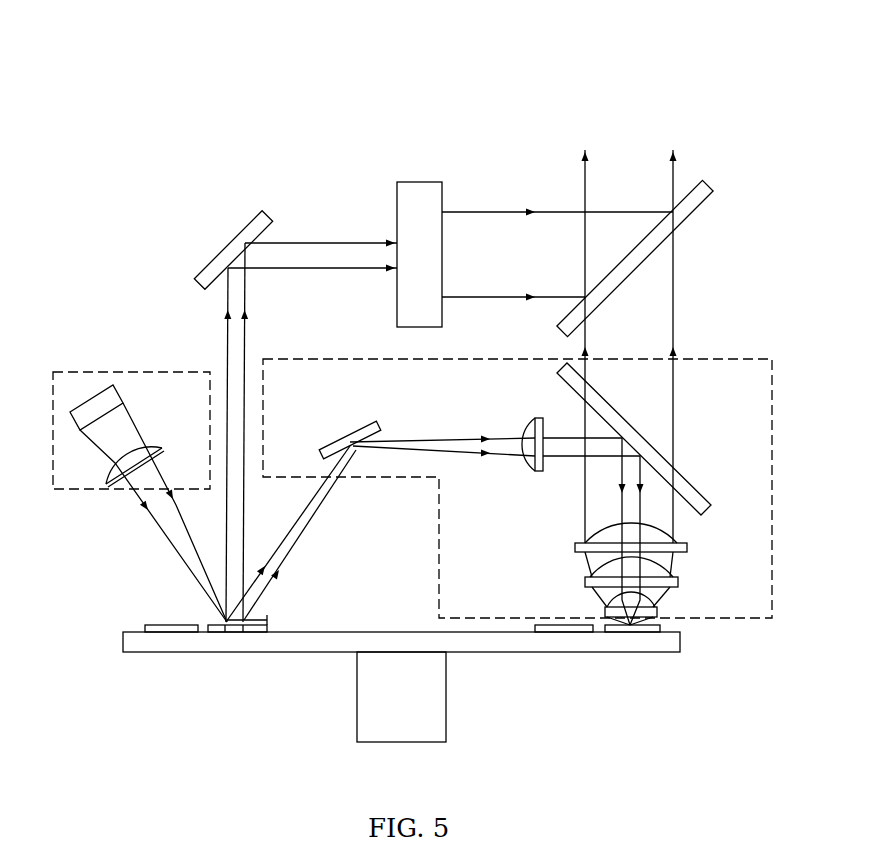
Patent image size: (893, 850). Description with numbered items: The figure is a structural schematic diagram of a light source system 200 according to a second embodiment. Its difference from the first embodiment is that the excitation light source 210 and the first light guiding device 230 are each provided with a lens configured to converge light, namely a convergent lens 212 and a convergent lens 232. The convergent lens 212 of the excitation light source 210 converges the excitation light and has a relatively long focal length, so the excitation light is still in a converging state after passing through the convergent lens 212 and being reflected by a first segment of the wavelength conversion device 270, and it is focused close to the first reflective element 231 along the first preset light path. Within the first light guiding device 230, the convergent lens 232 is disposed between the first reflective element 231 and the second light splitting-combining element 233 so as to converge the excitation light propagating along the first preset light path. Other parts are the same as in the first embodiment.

The light source system 200 is at (436, 46).
The excitation light source 210 is at (88, 372).
The convergent lens 212 is at (142, 445).
The first light guiding device 230 is at (438, 582).
The first reflective element 231 is at (344, 430).
The convergent lens 232 is at (538, 472).
The second light splitting-combining element 233 is at (683, 477).
The wavelength conversion device 270 is at (171, 662).